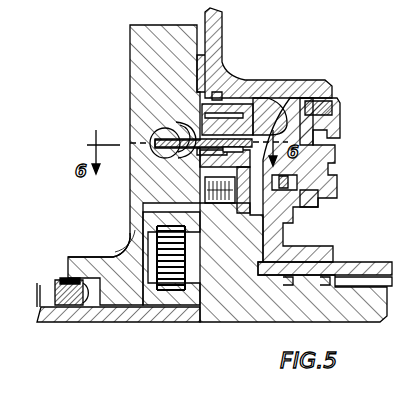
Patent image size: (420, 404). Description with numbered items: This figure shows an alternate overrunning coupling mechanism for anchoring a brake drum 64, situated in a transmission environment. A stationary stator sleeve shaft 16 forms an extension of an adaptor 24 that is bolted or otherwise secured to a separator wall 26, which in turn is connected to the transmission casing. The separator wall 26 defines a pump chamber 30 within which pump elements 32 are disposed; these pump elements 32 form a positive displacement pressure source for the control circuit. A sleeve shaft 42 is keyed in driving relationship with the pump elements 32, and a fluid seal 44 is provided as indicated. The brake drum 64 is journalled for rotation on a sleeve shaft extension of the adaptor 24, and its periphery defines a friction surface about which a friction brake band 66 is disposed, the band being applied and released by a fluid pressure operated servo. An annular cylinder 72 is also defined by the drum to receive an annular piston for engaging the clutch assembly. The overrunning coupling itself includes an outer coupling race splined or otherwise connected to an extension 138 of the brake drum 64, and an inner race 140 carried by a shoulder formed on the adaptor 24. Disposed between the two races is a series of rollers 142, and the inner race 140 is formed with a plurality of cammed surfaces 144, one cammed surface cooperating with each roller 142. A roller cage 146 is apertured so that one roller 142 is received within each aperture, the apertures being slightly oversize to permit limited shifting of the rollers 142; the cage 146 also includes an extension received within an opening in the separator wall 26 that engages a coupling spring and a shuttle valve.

The stationary stator sleeve shaft 16 is at (64, 322).
The adaptor 24 is at (240, 253).
The separator wall 26 is at (131, 74).
The pump chamber 30 is at (130, 240).
The pump elements 32 is at (190, 250).
The sleeve shaft 42 is at (58, 290).
The fluid seal 44 is at (66, 279).
The brake drum 64 is at (298, 90).
The friction brake band 66 is at (336, 100).
The annular cylinder 72 is at (300, 208).
The extension of the brake drum 138 is at (228, 92).
The inner race 140 is at (207, 203).
The rollers 142 is at (204, 160).
The cammed surfaces 144 is at (287, 128).
The roller cage 146 is at (168, 131).